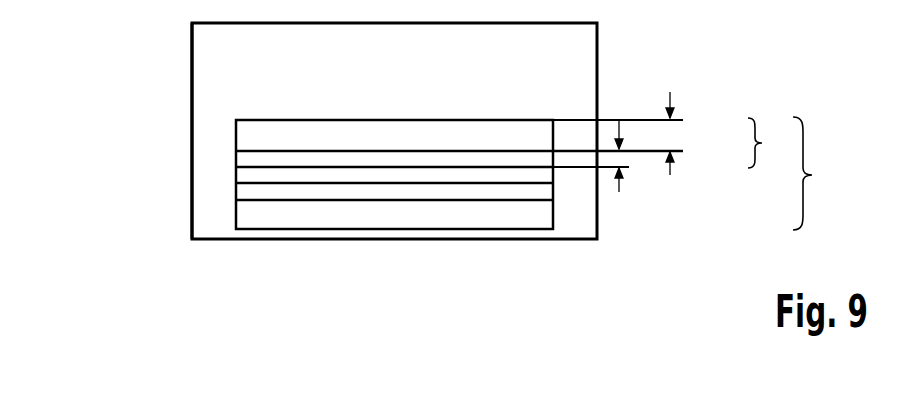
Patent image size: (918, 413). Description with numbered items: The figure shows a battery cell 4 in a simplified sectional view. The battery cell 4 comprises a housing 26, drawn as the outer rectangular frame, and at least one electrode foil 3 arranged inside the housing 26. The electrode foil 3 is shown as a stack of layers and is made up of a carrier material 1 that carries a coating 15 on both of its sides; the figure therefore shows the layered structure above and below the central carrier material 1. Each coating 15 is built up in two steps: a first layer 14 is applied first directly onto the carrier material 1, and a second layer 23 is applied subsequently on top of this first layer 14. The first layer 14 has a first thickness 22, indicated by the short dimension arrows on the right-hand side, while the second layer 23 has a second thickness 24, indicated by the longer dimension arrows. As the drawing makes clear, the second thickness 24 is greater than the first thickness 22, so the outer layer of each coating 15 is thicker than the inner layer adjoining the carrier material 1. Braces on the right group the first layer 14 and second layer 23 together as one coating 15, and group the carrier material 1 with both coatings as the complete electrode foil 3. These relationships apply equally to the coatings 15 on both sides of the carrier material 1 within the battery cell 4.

The carrier material 1 is at (248, 172).
The electrode foil 3 is at (811, 173).
The battery cell 4 is at (136, 57).
The first layer 14 is at (283, 157).
The coating 15 is at (770, 143).
The first thickness 22 is at (620, 157).
The second layer 23 is at (357, 128).
The second thickness 24 is at (670, 135).
The housing 26 is at (192, 98).